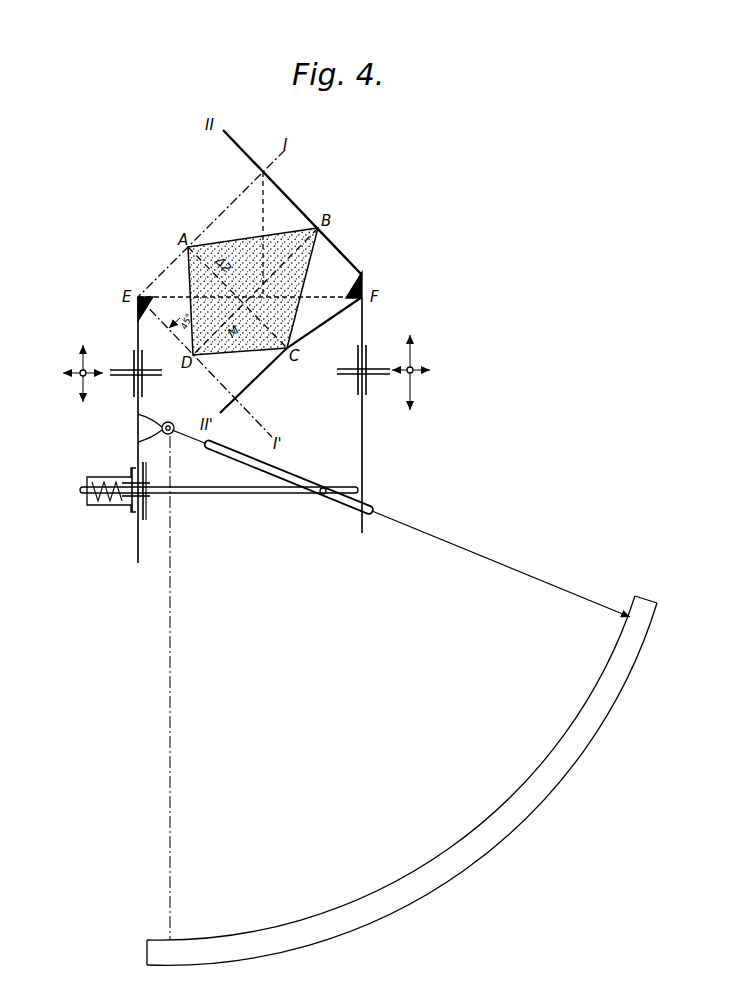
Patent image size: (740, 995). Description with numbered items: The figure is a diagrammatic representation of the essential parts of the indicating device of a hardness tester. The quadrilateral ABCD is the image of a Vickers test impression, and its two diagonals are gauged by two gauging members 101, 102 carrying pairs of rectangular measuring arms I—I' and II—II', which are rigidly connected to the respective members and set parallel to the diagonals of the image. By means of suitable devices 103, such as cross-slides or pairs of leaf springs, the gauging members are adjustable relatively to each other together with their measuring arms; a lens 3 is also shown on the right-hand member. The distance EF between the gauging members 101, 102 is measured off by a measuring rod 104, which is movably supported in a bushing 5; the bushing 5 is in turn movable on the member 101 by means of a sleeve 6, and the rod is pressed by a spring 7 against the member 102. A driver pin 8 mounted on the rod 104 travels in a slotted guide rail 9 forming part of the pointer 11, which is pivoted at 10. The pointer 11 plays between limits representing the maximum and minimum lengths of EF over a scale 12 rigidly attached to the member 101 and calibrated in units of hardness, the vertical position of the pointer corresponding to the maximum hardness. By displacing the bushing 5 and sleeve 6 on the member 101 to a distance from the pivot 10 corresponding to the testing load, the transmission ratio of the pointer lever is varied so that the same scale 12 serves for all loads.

The lens 3 is at (363, 370).
The bushing 5 is at (148, 500).
The sleeve 6 is at (131, 514).
The spring 7 is at (106, 476).
The driver pin 8 is at (320, 495).
The slotted guide rail 9 is at (283, 470).
The pivot 10 is at (161, 673).
The pointer 11 is at (501, 564).
The scale 12 is at (461, 850).
The gauging member 101 is at (146, 442).
The gauging member 102 is at (349, 427).
The adjusting devices 103 is at (143, 374).
The measuring rod 104 is at (219, 498).